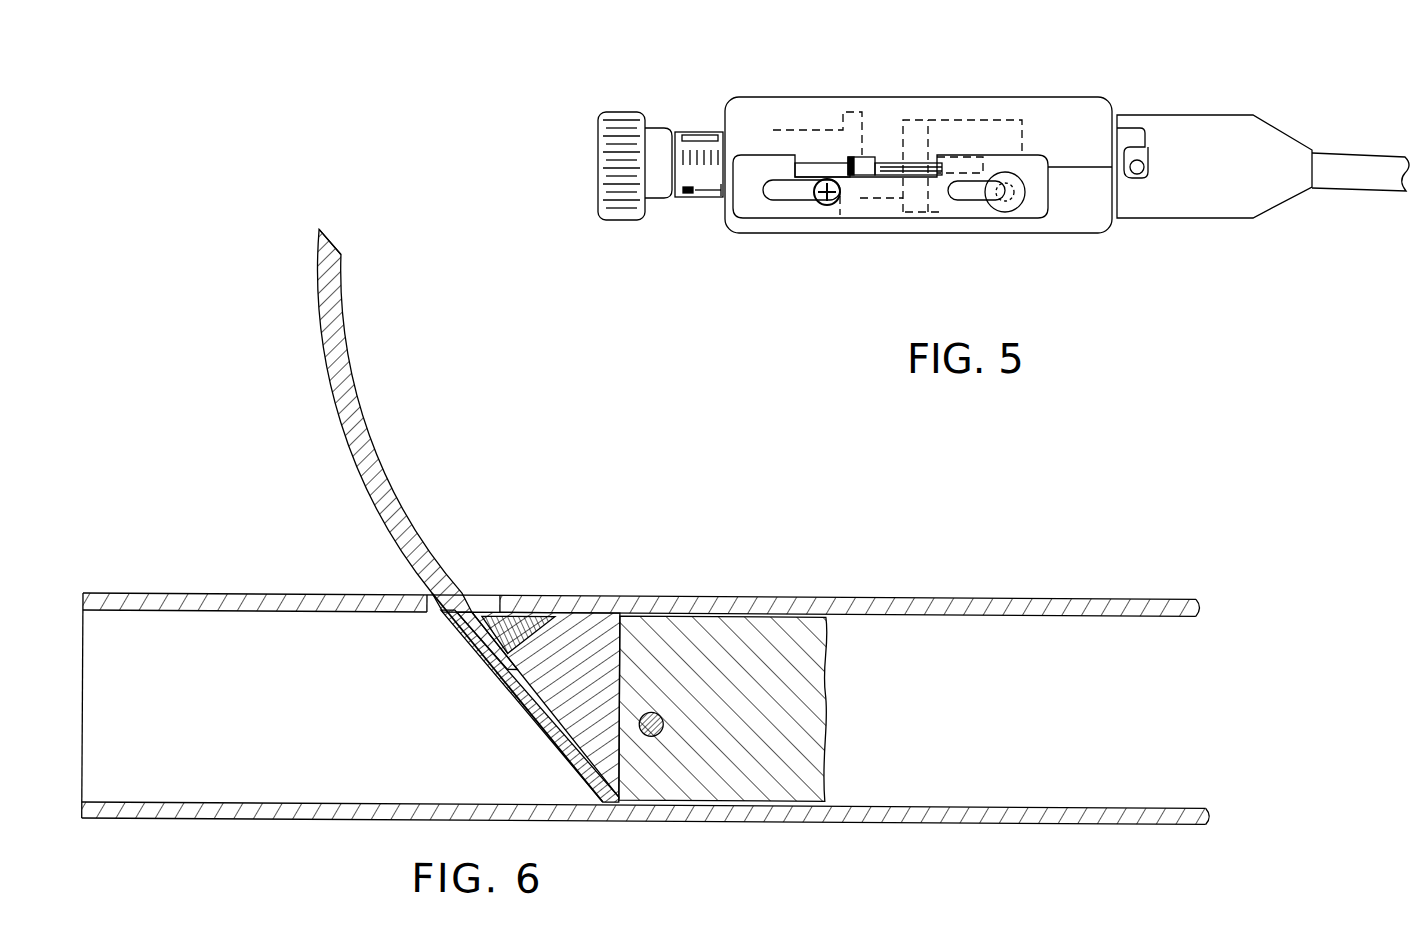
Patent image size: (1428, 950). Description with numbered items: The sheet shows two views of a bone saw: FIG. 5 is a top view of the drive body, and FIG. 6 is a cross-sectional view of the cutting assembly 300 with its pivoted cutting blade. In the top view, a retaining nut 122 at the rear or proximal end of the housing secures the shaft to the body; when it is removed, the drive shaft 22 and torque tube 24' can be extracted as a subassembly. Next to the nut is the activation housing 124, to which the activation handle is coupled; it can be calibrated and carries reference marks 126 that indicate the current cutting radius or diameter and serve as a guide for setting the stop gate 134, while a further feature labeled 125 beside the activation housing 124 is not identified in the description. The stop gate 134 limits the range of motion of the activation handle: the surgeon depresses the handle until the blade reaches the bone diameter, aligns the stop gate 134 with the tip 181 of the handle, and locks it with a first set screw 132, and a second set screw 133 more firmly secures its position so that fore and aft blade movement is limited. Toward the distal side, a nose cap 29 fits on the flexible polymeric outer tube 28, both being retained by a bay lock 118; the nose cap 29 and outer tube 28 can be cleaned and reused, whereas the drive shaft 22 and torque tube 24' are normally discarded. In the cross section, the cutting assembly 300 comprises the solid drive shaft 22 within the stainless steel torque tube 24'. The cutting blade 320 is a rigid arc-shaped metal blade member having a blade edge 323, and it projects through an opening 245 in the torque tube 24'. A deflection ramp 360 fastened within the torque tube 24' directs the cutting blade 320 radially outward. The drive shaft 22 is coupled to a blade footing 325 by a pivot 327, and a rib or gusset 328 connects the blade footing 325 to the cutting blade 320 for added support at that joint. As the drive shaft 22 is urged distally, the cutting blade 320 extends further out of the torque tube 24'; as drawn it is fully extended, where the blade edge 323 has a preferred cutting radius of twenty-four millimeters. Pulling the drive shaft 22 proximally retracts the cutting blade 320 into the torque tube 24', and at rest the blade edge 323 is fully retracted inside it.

In FIG. 5, the retaining nut 122 is at (622, 112).
In FIG. 5, the activation housing 124 is at (673, 198).
In FIG. 5, the reference marks 126 is at (701, 152).
In FIG. 5, the lock indicator 125 is at (703, 198).
In FIG. 5, the stop gate 134 is at (757, 167).
In FIG. 5, the tip of the activation handle 181 is at (862, 165).
In FIG. 5, the second set screw 133 is at (826, 207).
In FIG. 5, the first set screw 132 is at (1008, 213).
In FIG. 5, the nose cap 29 is at (1273, 218).
In FIG. 5, the bay lock 118 is at (1142, 176).
In FIG. 5, the outer sheath 28 is at (1357, 162).
In FIG. 6, the torque tube 24' is at (646, 678).
In FIG. 6, the opening 245 is at (470, 586).
In FIG. 6, the drive shaft 22 is at (808, 716).
In FIG. 6, the blade footing 325 is at (587, 637).
In FIG. 6, the rib or gusset 328 is at (492, 611).
In FIG. 6, the cutting blade 320 is at (338, 296).
In FIG. 6, the deflection ramp 360 is at (510, 702).
In FIG. 6, the blade edge 323 is at (331, 243).
In FIG. 6, the pivot 327 is at (655, 733).
In FIG. 6, the cutting assembly 300 is at (436, 383).